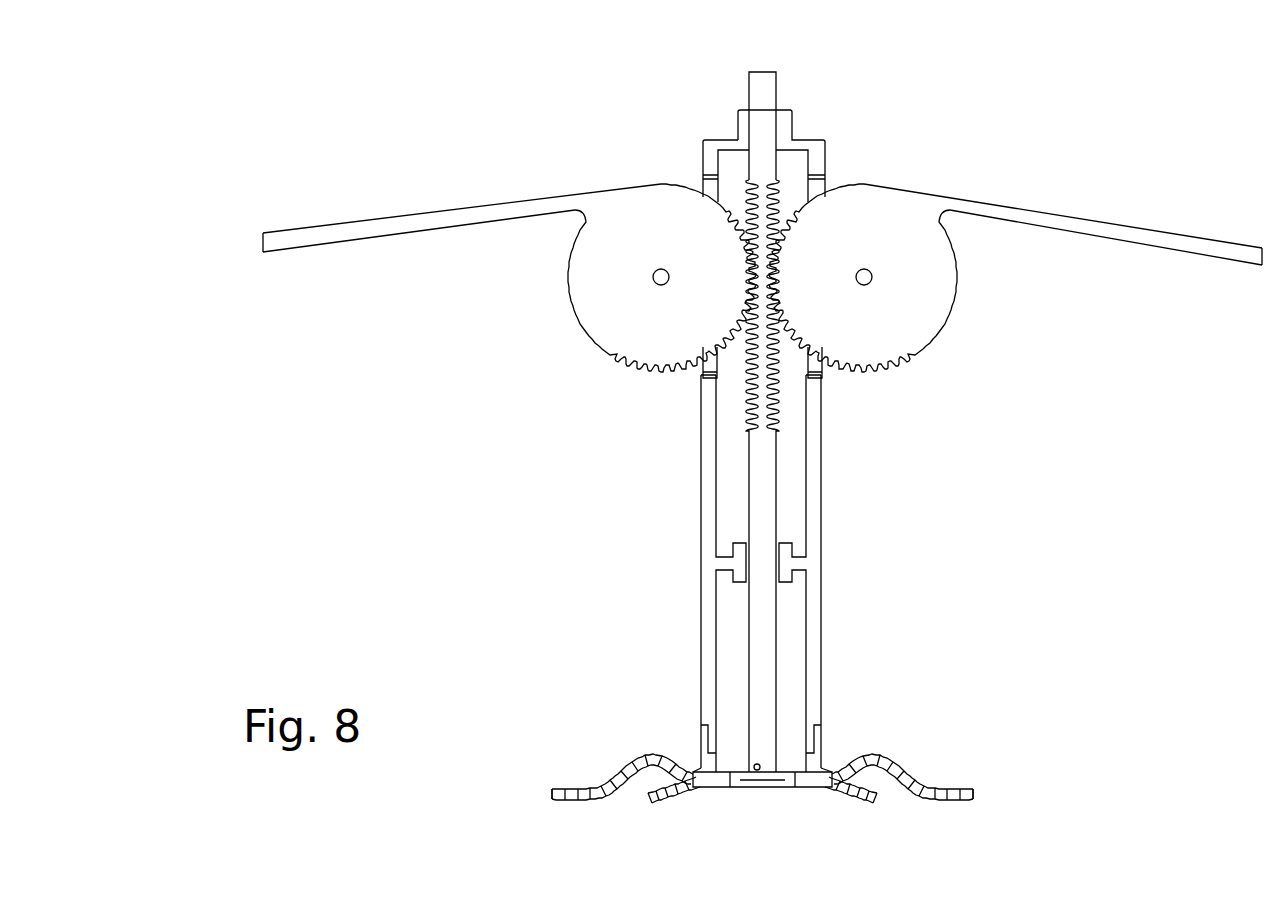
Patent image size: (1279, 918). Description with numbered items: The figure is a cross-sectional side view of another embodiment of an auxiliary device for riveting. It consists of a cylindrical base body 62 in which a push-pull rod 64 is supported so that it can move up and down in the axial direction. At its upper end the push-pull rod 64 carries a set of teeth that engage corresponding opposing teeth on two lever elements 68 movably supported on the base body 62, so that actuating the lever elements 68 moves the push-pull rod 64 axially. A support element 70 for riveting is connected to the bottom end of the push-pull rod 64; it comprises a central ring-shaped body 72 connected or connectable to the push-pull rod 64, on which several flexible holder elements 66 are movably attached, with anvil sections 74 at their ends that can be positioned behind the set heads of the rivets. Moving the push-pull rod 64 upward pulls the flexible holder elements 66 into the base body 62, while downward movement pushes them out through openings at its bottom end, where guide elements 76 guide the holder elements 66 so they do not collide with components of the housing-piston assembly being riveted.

The cylindrical base body 62 is at (699, 462).
The push-pull rod 64 is at (763, 84).
The flexible holder elements 66 is at (907, 802).
The lever elements 68 is at (695, 323).
The support element 70 is at (607, 765).
The central ring-shaped body 72 is at (738, 766).
The anvil sections 74 is at (592, 793).
The guide elements 76 is at (815, 742).